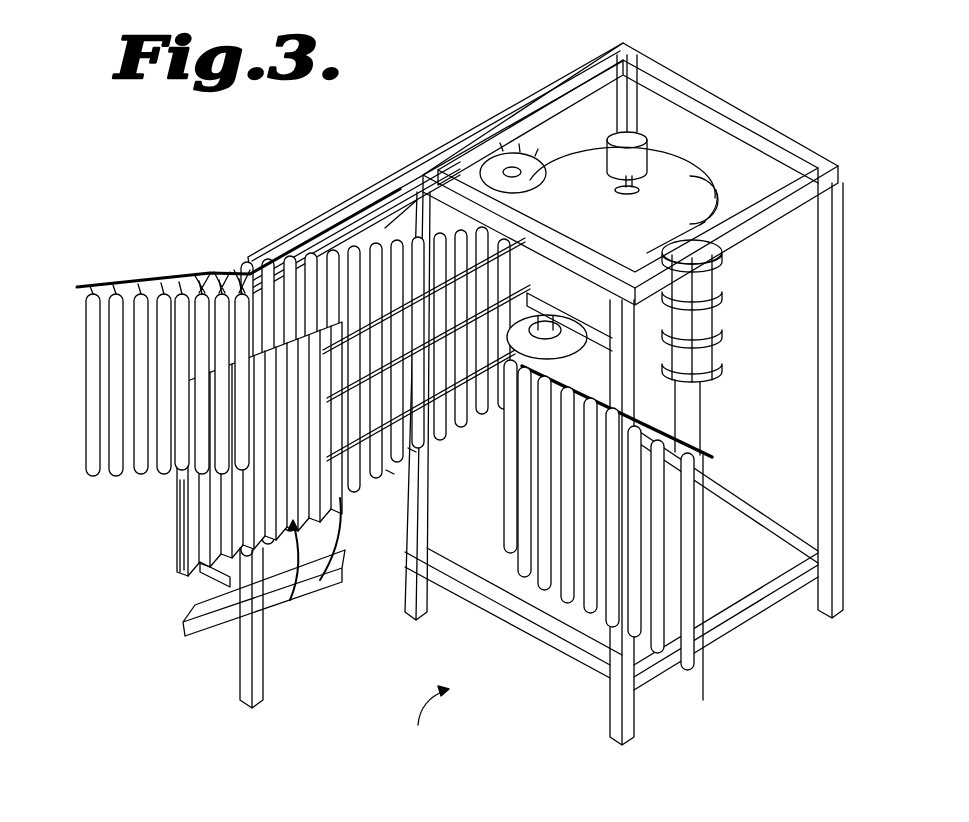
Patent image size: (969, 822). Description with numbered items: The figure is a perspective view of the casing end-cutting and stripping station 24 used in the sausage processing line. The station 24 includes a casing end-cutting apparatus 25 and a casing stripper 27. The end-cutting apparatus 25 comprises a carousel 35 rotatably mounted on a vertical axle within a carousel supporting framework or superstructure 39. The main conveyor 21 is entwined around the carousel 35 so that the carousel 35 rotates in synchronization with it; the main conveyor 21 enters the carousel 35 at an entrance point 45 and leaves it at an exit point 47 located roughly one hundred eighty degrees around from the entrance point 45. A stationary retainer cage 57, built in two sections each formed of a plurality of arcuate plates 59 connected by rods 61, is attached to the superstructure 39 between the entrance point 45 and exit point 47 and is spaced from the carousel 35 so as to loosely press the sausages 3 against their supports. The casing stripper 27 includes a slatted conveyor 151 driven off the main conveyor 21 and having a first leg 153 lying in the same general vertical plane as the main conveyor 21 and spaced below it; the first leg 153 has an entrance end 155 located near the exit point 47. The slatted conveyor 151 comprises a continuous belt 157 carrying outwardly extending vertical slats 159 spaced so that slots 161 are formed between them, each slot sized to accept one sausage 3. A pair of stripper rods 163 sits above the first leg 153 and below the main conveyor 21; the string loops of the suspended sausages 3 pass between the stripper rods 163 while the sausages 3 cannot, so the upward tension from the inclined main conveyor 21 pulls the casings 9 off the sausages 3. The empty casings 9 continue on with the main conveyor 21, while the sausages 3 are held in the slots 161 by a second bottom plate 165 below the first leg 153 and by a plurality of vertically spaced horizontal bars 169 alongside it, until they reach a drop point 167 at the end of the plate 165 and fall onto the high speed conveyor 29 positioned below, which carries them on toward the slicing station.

The sausages 3 is at (717, 553).
The casings 9 is at (78, 384).
The main conveyor 21 is at (97, 287).
The casing end-cutting and stripping station 24 is at (443, 711).
The casing end-cutting apparatus 25 is at (710, 57).
The casing stripper 27 is at (301, 216).
The high speed conveyor 29 is at (190, 628).
The carousel 35 is at (687, 157).
The carousel supporting framework or superstructure 39 is at (803, 143).
The entrance point 45 is at (710, 213).
The exit point 47 is at (527, 188).
The retainer cage 57 is at (717, 263).
The arcuate plates 59 is at (720, 323).
The rods 61 is at (717, 307).
The slatted conveyor 151 is at (190, 480).
The first leg 153 is at (449, 450).
The entrance end 155 is at (503, 203).
The continuous belt 157 is at (207, 572).
The vertical slats 159 is at (185, 556).
The slots 161 is at (308, 576).
The stripper rods 163 is at (240, 284).
The second bottom plate 165 is at (490, 435).
The drop point 167 is at (342, 498).
The horizontal bars 169 is at (327, 397).